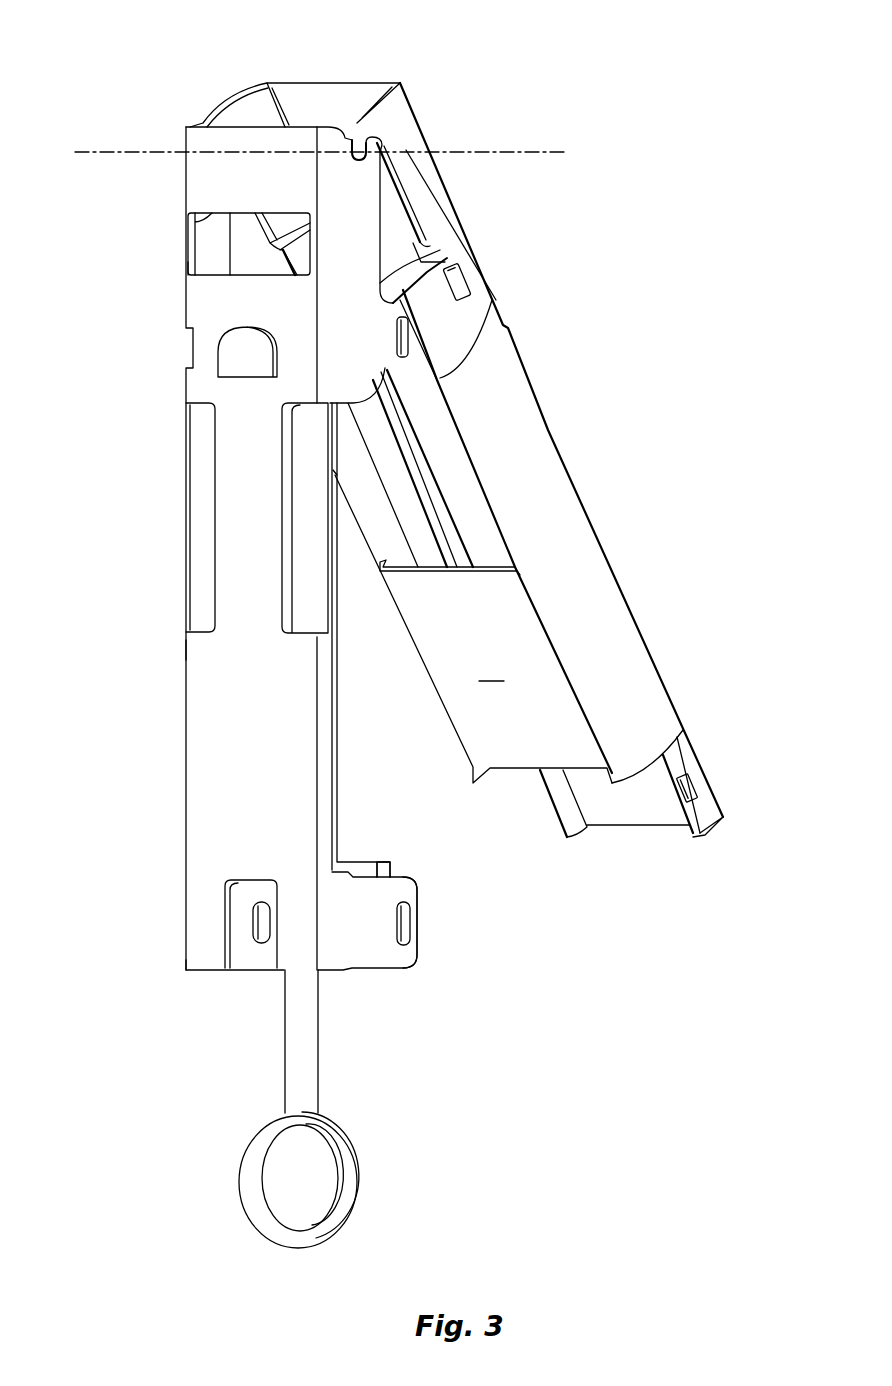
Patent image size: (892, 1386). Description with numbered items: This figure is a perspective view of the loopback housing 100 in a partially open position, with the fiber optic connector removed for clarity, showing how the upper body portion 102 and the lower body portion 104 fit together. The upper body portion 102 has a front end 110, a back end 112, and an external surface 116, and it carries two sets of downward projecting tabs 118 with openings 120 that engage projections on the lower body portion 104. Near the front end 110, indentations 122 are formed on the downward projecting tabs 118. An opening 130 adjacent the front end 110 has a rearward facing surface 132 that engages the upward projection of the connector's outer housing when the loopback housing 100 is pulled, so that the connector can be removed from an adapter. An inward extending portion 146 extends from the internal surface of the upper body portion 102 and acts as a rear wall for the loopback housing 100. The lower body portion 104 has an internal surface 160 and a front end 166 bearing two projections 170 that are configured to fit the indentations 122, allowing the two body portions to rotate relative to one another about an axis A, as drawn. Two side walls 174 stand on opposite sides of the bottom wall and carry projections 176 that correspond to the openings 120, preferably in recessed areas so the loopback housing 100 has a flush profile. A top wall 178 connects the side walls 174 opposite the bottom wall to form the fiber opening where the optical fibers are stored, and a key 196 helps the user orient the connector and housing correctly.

The loopback housing 100 is at (435, 630).
The upper body portion 102 is at (296, 632).
The lower body portion 104 is at (562, 460).
The front end 110 is at (192, 123).
The back end 112 is at (203, 972).
The external surface 116 is at (215, 720).
The downward projecting tabs 118 is at (403, 958).
The openings 120 is at (412, 920).
The indentations 122 is at (363, 170).
The opening 130 is at (208, 282).
The rearward facing surface 132 is at (207, 222).
The inward extending portion 146 is at (370, 862).
The internal surface 160 is at (477, 515).
The front end 166 is at (318, 82).
The projections 170 is at (358, 145).
The side walls 174 is at (653, 692).
The projections 176 is at (688, 800).
The top wall 178 is at (463, 290).
The key 196 is at (232, 353).